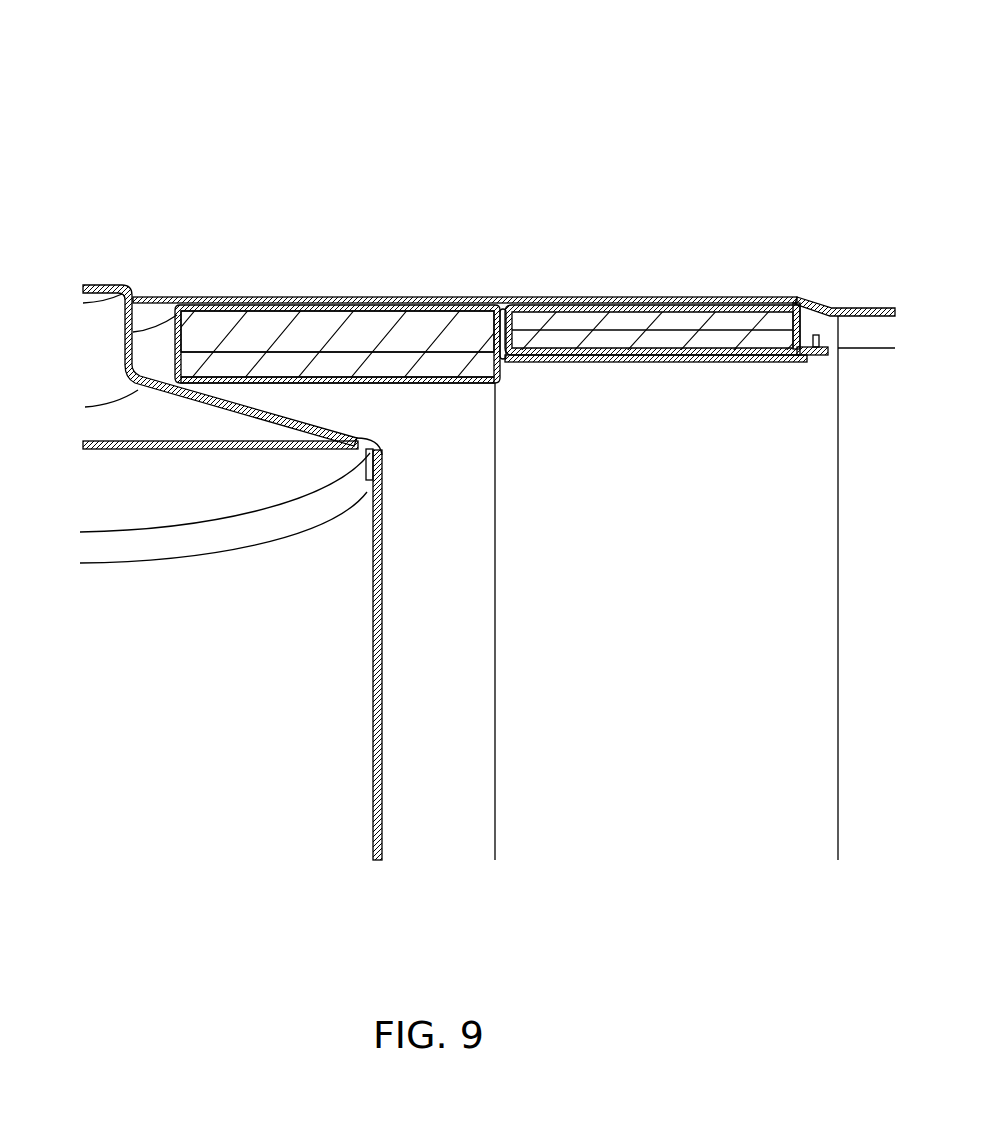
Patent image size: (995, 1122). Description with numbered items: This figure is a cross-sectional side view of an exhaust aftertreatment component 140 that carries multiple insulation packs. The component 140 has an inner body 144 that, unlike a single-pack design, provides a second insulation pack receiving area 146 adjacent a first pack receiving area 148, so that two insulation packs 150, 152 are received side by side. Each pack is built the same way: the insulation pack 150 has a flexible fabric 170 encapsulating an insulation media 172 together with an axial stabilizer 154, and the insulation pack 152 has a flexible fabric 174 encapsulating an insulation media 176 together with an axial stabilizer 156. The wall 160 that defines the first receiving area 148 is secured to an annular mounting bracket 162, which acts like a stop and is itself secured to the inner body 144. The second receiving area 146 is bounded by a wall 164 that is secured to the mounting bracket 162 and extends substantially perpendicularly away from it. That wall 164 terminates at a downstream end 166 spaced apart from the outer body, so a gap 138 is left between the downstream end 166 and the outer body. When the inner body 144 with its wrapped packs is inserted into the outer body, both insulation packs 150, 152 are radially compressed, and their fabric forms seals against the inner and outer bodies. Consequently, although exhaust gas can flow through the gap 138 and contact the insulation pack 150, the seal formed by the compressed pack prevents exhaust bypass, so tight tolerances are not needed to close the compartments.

The gap 138 is at (824, 325).
The component 140 is at (690, 82).
The inner body 144 is at (514, 428).
The second insulation pack receiving area 146 is at (812, 318).
The first pack receiving area 148 is at (158, 347).
The insulation pack 150 is at (666, 337).
The insulation pack 152 is at (326, 306).
The axial stabilizer 154 is at (727, 330).
The axial stabilizer 156 is at (255, 347).
The wall 160 is at (288, 383).
The annular mounting bracket 162 is at (505, 322).
The wall 164 is at (715, 362).
The downstream end 166 is at (822, 337).
The flexible fabric 170 is at (762, 305).
The insulation media 172 is at (543, 322).
The flexible fabric 174 is at (430, 320).
The insulation media 176 is at (397, 325).